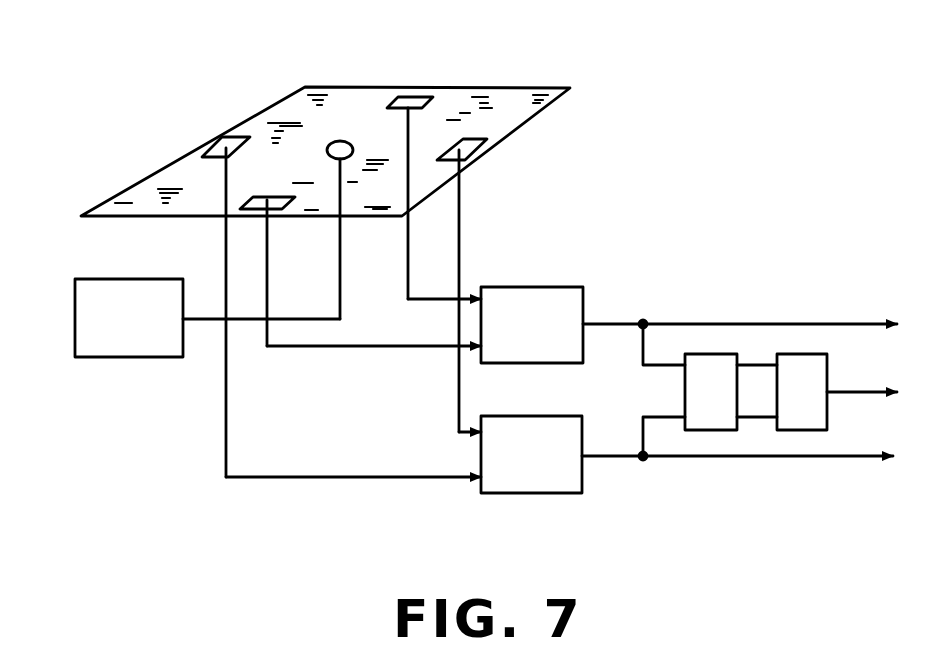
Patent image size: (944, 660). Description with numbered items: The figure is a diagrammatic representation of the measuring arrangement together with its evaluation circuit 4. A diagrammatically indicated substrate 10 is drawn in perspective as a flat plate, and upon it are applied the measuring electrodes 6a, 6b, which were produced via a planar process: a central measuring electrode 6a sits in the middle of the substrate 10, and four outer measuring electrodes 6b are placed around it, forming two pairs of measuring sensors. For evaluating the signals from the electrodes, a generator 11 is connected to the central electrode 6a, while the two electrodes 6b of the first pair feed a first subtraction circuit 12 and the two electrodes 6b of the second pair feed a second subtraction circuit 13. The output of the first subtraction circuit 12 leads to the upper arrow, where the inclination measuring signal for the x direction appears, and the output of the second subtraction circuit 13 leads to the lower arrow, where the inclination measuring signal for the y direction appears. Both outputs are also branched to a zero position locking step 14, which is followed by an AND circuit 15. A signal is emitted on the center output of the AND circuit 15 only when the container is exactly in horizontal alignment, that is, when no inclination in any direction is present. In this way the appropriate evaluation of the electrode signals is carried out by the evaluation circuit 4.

The evaluation circuit 4 is at (615, 307).
The measuring electrode 6a is at (338, 141).
The measuring electrodes 6b is at (230, 137).
The substrate 10 is at (527, 100).
The generator 11 is at (103, 345).
The first subtraction circuit 12 is at (540, 305).
The second subtraction circuit 13 is at (520, 482).
The zero position locking step 14 is at (707, 362).
The AND circuit 15 is at (803, 362).